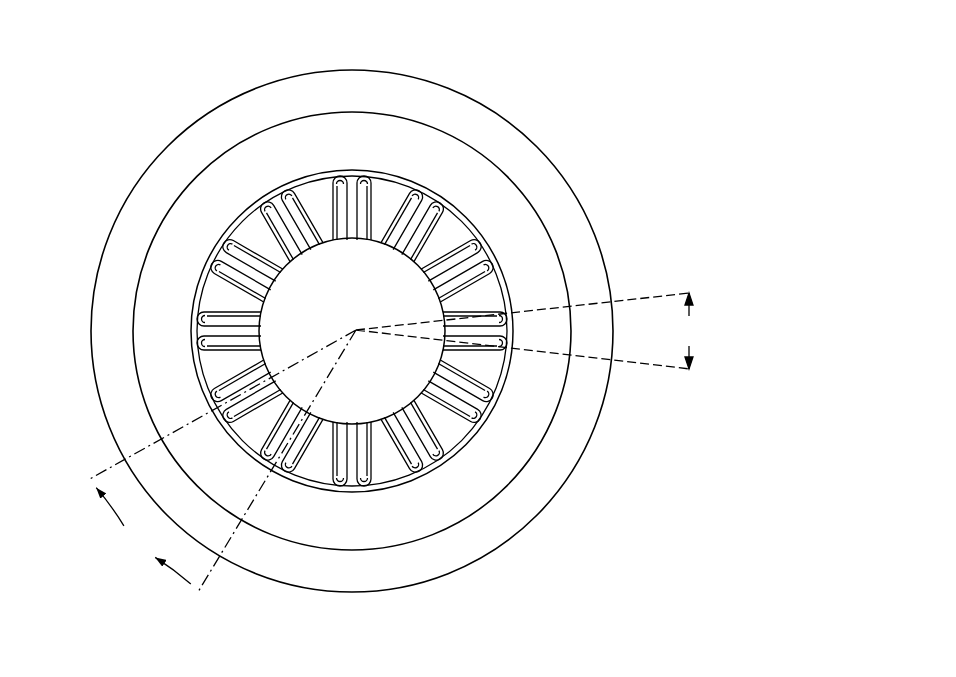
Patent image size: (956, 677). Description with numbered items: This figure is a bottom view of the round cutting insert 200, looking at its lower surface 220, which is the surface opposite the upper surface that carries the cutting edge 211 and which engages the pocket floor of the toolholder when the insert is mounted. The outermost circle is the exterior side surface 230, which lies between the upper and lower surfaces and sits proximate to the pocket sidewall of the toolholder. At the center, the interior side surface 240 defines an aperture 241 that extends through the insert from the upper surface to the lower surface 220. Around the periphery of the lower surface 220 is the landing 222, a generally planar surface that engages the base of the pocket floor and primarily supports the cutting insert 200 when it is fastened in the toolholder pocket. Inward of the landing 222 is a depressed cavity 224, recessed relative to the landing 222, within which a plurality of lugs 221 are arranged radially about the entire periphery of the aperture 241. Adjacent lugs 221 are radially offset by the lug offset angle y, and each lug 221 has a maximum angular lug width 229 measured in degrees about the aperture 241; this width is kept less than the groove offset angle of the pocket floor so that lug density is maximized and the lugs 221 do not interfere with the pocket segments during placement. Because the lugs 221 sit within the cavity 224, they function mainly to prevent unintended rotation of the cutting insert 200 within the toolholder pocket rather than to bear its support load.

The round cutting insert 200 is at (434, 324).
The cutting edge 211 is at (374, 331).
The lower surface 220 is at (417, 369).
The lugs 221 is at (352, 187).
The landing 222 is at (373, 394).
The depressed cavity 224 is at (485, 475).
The maximum angular lug width 229 is at (531, 331).
The exterior side surface 230 is at (382, 331).
The interior side surface 240 is at (352, 330).
The aperture 241 is at (393, 308).